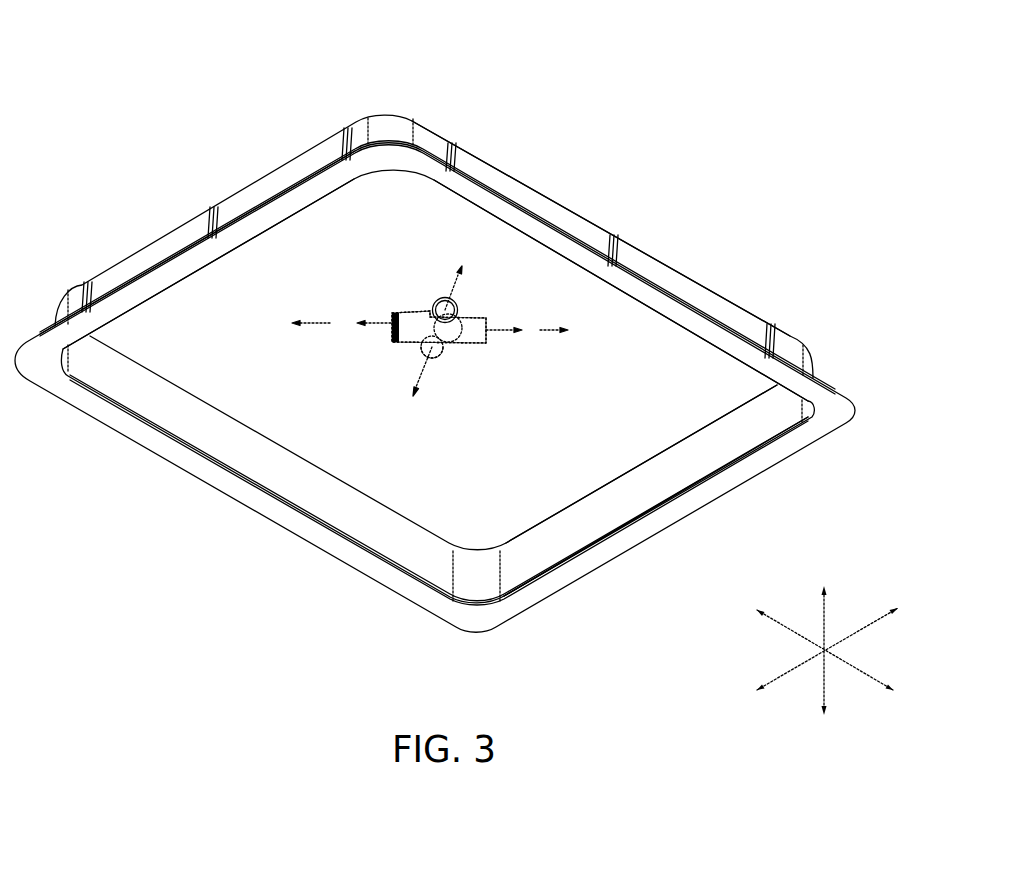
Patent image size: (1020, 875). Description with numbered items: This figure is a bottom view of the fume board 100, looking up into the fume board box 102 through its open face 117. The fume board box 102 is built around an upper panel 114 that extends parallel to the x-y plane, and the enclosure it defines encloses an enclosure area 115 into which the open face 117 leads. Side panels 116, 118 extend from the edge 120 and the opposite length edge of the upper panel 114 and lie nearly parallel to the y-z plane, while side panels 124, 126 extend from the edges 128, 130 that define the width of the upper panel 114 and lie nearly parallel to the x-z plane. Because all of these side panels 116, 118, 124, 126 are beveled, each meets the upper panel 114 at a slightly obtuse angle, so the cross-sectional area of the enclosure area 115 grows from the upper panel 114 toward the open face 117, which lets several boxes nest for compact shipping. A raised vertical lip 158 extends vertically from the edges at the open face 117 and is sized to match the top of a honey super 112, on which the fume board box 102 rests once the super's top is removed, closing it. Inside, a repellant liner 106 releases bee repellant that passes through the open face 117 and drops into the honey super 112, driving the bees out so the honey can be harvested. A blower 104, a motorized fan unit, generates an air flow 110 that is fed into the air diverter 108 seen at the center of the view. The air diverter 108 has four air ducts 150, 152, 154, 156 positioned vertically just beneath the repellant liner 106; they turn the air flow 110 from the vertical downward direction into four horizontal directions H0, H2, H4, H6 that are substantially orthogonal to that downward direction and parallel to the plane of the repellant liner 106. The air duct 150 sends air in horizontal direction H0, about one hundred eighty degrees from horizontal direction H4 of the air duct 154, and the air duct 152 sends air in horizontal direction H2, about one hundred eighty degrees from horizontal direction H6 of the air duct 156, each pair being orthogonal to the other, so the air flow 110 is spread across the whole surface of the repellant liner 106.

The fume board 100 is at (664, 156).
The fume board box 102 is at (389, 75).
The blower 104 is at (600, 348).
The repellant liner 106 is at (713, 395).
The air diverter 108 is at (395, 340).
The air flow 110 is at (378, 320).
The honey super 112 is at (463, 297).
The upper panel 114 is at (290, 375).
The enclosure area 115 is at (453, 462).
The side panel 116 is at (427, 140).
The open face 117 is at (518, 448).
The side panel 118 is at (500, 193).
The edge 120 is at (650, 256).
The side panel 124 is at (297, 188).
The side panel 126 is at (635, 493).
The edge 128 is at (340, 130).
The edge 130 is at (670, 445).
The air duct 150 is at (447, 356).
The air duct 152 is at (468, 320).
The air duct 154 is at (420, 312).
The air duct 156 is at (422, 347).
The raised vertical lip 158 is at (390, 172).
The horizontal direction H0 is at (547, 337).
The horizontal direction H2 is at (460, 270).
The horizontal direction H4 is at (315, 322).
The horizontal direction H6 is at (416, 398).